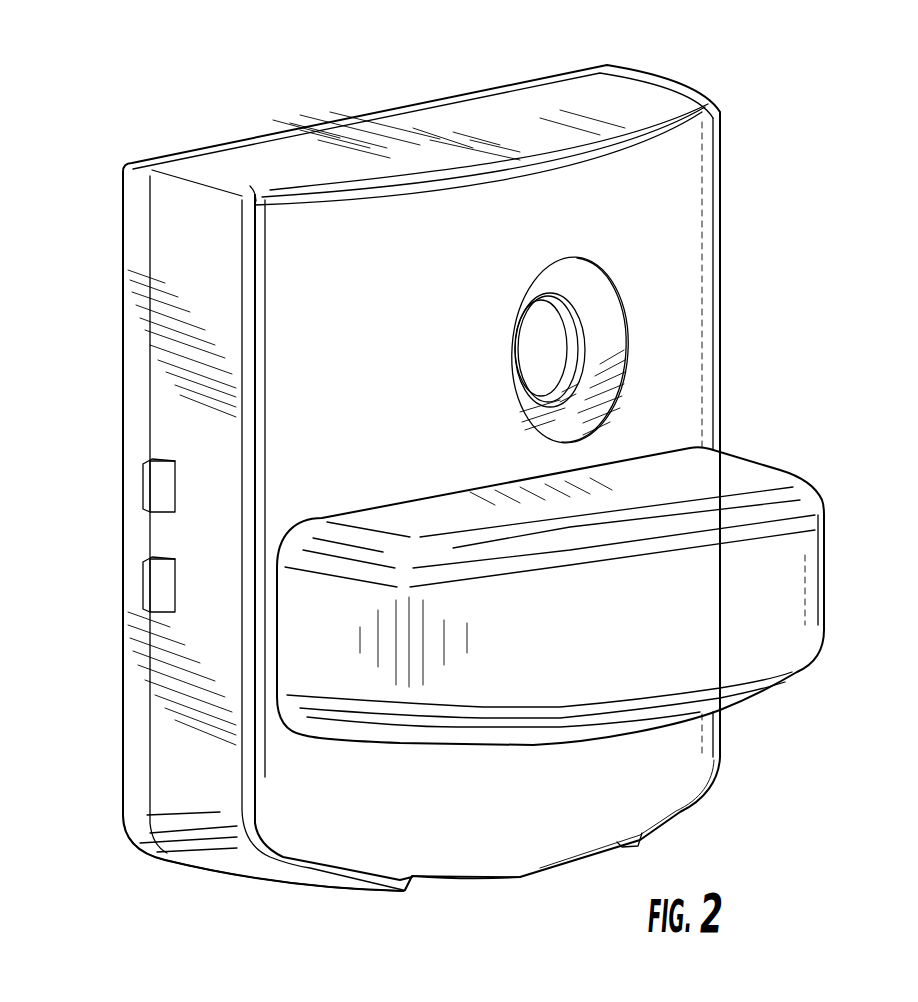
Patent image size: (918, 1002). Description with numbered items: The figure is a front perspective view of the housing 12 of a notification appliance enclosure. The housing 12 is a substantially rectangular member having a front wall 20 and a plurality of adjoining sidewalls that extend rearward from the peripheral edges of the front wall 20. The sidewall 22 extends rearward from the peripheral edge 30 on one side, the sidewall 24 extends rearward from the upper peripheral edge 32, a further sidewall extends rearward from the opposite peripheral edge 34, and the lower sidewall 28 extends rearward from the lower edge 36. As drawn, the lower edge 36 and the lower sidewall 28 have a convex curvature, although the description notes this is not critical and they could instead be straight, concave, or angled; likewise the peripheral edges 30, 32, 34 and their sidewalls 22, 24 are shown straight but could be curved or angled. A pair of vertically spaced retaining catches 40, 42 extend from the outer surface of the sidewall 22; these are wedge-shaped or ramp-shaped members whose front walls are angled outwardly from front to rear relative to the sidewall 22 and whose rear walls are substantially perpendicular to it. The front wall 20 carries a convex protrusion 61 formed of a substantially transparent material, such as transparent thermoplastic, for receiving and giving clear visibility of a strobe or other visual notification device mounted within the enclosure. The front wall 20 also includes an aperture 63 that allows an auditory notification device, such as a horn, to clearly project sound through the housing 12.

The housing 12 is at (160, 91).
The front wall 20 is at (687, 258).
The sidewall 22 is at (182, 372).
The sidewall 24 is at (410, 118).
The lower sidewall 28 is at (228, 868).
The peripheral edge 30 is at (240, 300).
The peripheral edge 32 is at (497, 163).
The peripheral edge 34 is at (720, 320).
The lower edge 36 is at (300, 862).
The retaining catch 40 is at (140, 486).
The retaining catch 42 is at (140, 587).
The convex protrusion 61 is at (639, 631).
The aperture 63 is at (560, 351).